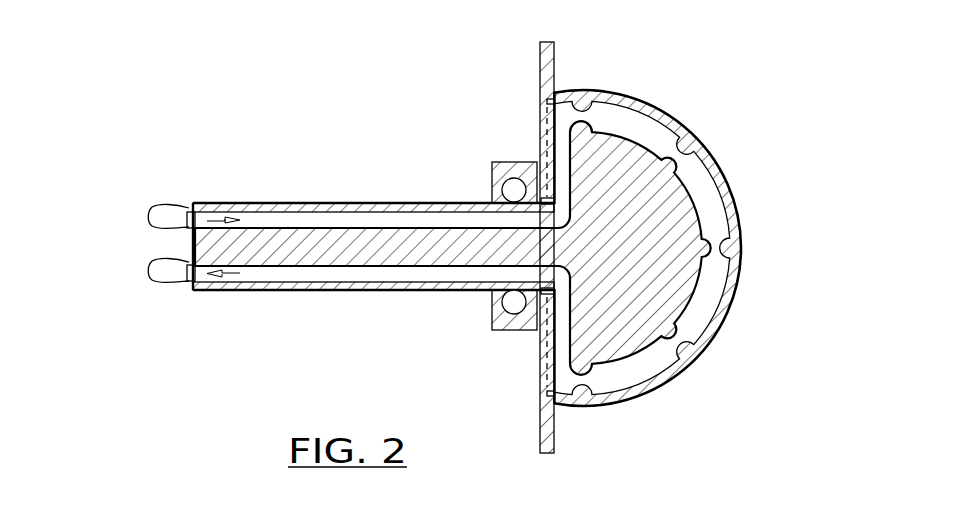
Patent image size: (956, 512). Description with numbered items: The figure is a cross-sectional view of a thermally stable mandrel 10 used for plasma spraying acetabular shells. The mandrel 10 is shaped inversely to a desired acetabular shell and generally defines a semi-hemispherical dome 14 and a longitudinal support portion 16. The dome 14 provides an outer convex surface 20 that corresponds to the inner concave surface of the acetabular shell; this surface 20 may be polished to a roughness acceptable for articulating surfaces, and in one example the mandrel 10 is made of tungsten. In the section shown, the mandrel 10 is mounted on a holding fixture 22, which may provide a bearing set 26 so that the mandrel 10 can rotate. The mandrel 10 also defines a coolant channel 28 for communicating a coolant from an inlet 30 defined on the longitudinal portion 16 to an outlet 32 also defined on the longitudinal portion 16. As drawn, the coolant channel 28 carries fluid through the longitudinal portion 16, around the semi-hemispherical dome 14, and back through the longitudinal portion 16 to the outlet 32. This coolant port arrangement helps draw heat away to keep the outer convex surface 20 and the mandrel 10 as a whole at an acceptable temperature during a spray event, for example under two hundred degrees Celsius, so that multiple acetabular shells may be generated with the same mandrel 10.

The thermally stable mandrel 10 is at (471, 234).
The semi-hemispherical dome 14 is at (720, 170).
The longitudinal support portion 16 is at (315, 203).
The outer convex surface 20 is at (700, 138).
The holding fixture 22 is at (542, 70).
The bearing set 26 is at (500, 172).
The coolant channel 28 is at (370, 220).
The inlet 30 is at (190, 206).
The outlet 32 is at (190, 286).